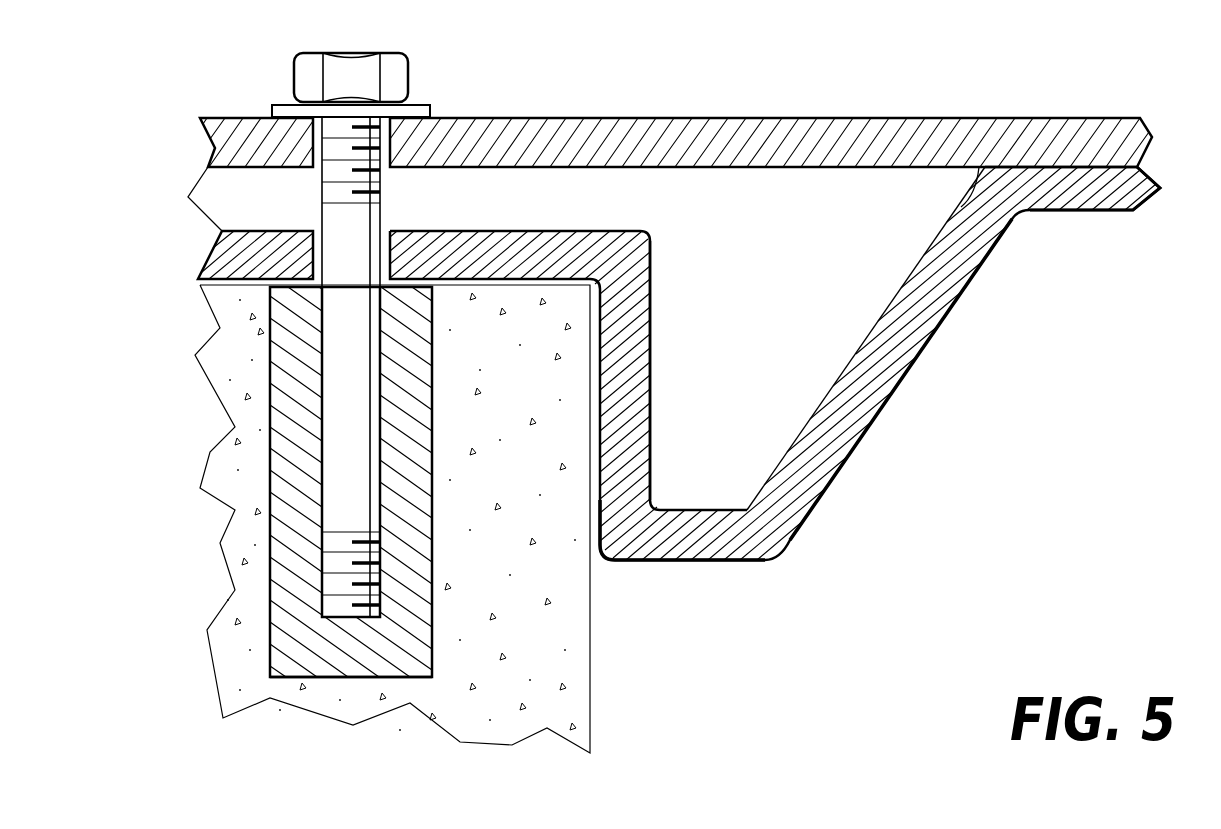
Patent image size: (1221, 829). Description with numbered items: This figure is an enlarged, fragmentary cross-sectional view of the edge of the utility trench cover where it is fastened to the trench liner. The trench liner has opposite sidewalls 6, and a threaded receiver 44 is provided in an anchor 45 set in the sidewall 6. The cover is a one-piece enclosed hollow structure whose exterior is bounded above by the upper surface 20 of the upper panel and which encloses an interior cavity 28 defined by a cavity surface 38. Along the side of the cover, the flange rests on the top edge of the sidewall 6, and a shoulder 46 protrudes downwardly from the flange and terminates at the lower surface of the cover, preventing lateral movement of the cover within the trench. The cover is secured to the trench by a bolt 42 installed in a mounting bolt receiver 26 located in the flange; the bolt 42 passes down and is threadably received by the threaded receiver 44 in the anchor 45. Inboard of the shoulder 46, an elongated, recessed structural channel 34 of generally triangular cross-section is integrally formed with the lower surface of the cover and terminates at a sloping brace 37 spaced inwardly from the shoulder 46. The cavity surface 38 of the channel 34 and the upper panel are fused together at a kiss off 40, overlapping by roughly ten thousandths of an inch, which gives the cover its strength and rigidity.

The sidewall 6 is at (590, 643).
The upper surface 20 is at (531, 118).
The mounting bolt receiver 26 is at (322, 140).
The interior cavity 28 is at (903, 293).
The structural channel 34 is at (1055, 212).
The sloping brace 37 is at (843, 466).
The cavity surface 38 is at (650, 336).
The kiss off 40 is at (978, 167).
The bolt 42 is at (404, 53).
The threaded receiver 44 is at (374, 325).
The anchor 45 is at (270, 675).
The shoulder 46 is at (598, 522).